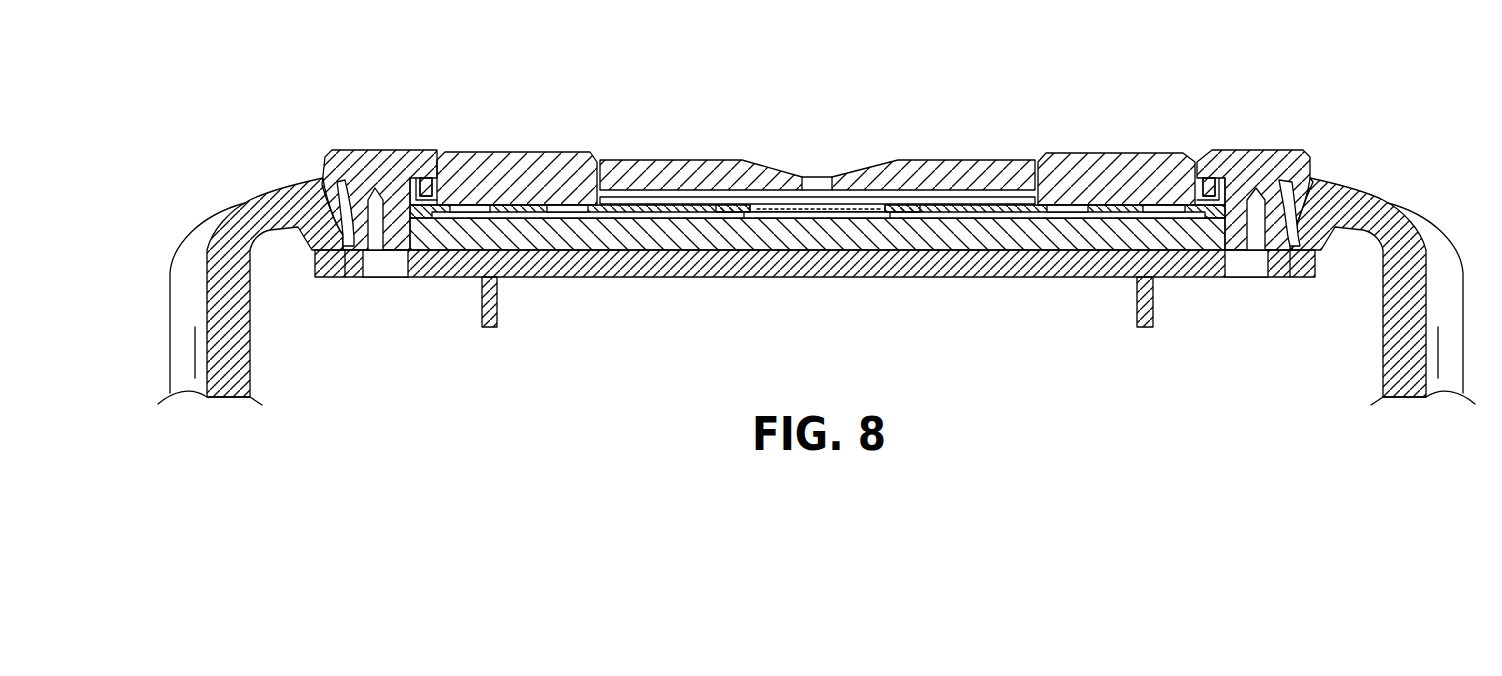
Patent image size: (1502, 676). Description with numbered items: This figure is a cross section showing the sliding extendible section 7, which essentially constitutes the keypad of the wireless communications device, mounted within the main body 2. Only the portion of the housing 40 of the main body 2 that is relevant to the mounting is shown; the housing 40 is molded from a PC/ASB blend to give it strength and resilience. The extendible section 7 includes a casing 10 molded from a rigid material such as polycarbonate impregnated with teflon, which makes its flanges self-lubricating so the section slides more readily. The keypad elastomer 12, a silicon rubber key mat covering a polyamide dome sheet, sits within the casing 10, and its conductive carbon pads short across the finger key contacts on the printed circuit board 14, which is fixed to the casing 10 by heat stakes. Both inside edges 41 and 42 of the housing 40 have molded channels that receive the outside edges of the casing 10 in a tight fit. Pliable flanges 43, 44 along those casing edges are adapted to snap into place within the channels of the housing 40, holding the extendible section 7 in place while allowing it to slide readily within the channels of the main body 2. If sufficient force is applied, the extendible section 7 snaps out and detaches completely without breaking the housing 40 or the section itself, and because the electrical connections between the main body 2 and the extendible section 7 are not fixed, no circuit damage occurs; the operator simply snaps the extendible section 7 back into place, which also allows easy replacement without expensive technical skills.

The main body 2 is at (1475, 295).
The extendible section 7 is at (801, 219).
The casing 10 is at (685, 158).
The keypad elastomer 12 is at (1105, 165).
The printed circuit board 14 is at (1062, 232).
The housing 40 is at (765, 278).
The inside edge 41 is at (345, 278).
The inside edge 42 is at (1290, 252).
The pliable flange 43 is at (345, 178).
The pliable flange 44 is at (1284, 176).